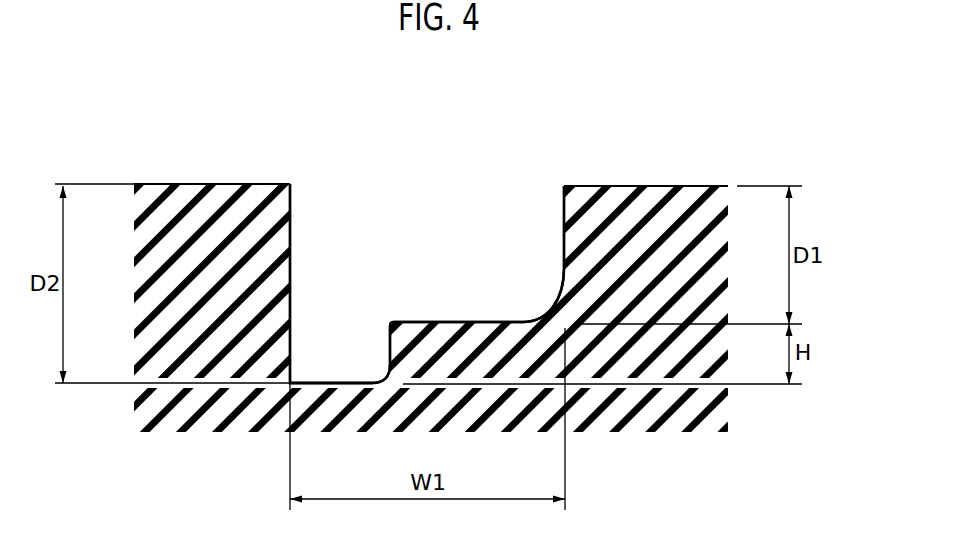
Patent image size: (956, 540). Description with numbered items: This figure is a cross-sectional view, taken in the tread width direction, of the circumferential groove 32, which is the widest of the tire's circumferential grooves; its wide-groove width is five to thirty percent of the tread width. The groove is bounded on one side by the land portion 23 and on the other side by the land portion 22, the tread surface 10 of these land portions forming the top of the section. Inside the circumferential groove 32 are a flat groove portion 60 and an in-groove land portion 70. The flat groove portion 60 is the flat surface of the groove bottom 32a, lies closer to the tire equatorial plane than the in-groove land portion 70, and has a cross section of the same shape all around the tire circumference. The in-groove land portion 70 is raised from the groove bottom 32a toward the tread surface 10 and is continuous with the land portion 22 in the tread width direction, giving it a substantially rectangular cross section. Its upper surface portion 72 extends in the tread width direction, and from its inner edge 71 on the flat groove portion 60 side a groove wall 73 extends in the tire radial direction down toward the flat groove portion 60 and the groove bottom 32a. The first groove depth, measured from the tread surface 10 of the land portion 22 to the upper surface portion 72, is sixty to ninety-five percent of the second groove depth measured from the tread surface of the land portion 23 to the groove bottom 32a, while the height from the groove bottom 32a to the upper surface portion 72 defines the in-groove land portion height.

The tread surface 10 is at (263, 184).
The land portion 22 is at (655, 198).
The land portion 23 is at (212, 197).
The circumferential groove 32 is at (427, 172).
The groove bottom 32a is at (355, 381).
The flat groove portion 60 is at (333, 371).
The in-groove land portion 70 is at (486, 302).
The inner edge 71 is at (389, 320).
The upper surface portion 72 is at (524, 321).
The groove wall 73 is at (386, 372).